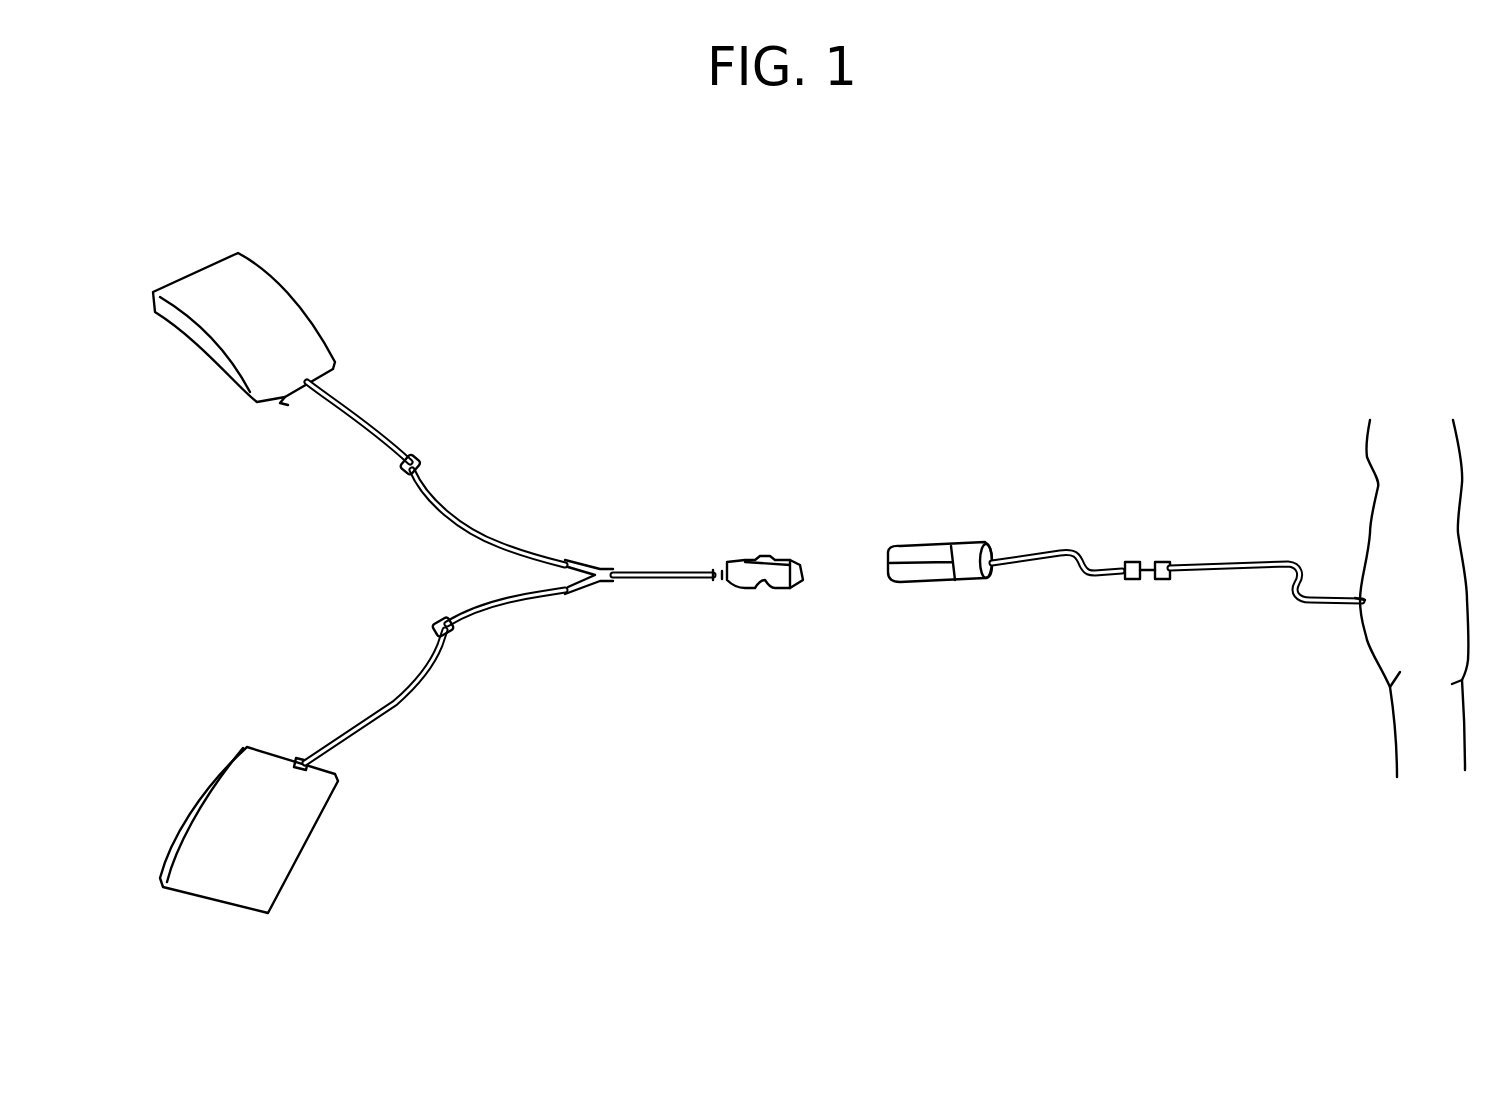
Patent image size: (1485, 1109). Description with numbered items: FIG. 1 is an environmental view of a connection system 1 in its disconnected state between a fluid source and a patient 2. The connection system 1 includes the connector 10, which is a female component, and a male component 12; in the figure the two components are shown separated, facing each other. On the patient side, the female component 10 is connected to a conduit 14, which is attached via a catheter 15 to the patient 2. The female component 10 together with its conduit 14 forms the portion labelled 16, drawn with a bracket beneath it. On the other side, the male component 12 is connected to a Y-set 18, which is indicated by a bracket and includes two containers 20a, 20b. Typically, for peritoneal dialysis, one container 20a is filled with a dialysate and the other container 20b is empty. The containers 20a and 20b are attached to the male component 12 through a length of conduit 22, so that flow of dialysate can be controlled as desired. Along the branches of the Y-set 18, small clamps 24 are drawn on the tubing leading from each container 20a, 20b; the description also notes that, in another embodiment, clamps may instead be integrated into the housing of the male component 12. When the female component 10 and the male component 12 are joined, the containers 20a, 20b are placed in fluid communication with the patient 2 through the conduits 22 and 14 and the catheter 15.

The connection system 1 is at (886, 531).
The patient 2 is at (1380, 458).
The connector 10 is at (937, 557).
The male component 12 is at (778, 560).
The conduit 14 is at (1057, 553).
The catheter 15 is at (1353, 597).
The infusion unit 16 is at (1126, 635).
The Y-set 18 is at (303, 468).
The container 20a is at (287, 307).
The container 20b is at (298, 843).
The conduit 22 is at (652, 568).
The clamps 24 is at (450, 613).